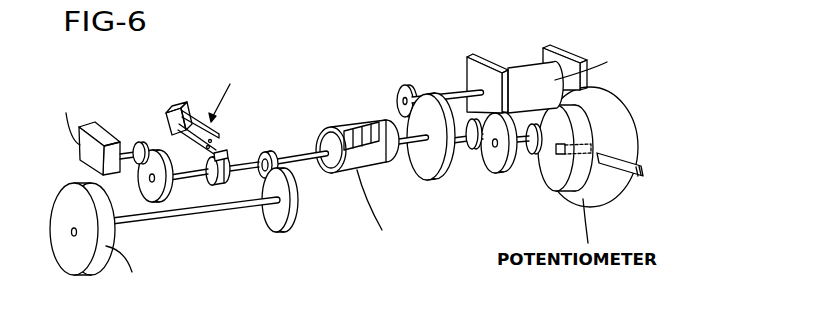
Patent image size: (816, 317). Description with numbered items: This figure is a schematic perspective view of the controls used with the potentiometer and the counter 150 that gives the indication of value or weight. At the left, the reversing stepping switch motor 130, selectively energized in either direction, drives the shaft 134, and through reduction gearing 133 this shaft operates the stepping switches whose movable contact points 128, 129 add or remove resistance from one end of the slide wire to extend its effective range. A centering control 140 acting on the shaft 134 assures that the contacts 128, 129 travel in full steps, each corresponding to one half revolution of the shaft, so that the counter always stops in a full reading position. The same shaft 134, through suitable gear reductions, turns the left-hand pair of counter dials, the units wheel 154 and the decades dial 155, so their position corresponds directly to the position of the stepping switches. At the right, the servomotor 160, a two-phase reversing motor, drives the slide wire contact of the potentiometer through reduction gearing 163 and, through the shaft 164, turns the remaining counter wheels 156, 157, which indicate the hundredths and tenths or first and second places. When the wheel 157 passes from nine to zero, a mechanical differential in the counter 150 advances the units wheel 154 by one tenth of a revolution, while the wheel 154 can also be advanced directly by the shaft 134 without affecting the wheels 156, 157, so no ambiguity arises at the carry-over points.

The contact point 128 is at (132, 245).
The contact point 129 is at (70, 262).
The reversing stepping switch motor 130 is at (82, 147).
The reduction gearing 133 is at (278, 222).
The shaft 134 is at (243, 157).
The centering control 140 is at (167, 108).
The counter 150 is at (374, 162).
The units wheel 154 is at (350, 132).
The indicator dial 155 is at (352, 158).
The counter wheel 156 is at (385, 126).
The counter wheel 157 is at (375, 170).
The servomotor 160 is at (518, 68).
The reduction gearing 163 is at (497, 168).
The shaft 164 is at (421, 180).